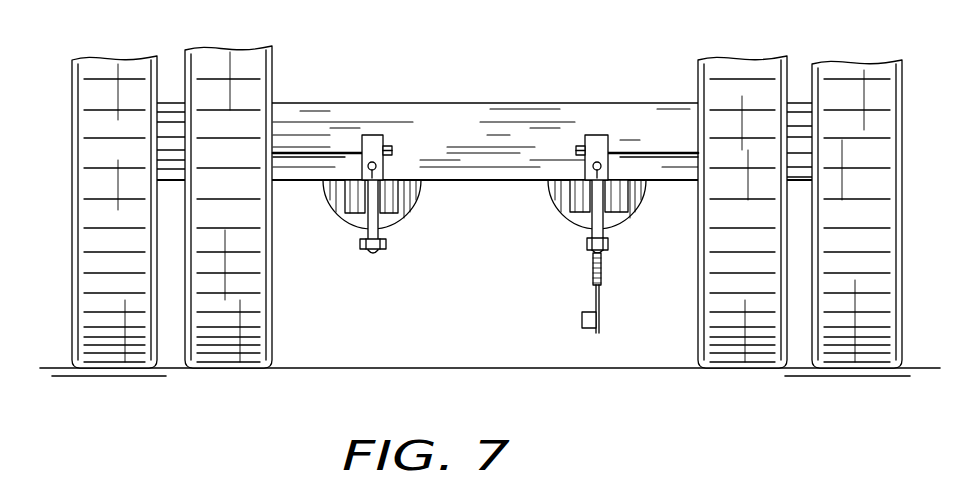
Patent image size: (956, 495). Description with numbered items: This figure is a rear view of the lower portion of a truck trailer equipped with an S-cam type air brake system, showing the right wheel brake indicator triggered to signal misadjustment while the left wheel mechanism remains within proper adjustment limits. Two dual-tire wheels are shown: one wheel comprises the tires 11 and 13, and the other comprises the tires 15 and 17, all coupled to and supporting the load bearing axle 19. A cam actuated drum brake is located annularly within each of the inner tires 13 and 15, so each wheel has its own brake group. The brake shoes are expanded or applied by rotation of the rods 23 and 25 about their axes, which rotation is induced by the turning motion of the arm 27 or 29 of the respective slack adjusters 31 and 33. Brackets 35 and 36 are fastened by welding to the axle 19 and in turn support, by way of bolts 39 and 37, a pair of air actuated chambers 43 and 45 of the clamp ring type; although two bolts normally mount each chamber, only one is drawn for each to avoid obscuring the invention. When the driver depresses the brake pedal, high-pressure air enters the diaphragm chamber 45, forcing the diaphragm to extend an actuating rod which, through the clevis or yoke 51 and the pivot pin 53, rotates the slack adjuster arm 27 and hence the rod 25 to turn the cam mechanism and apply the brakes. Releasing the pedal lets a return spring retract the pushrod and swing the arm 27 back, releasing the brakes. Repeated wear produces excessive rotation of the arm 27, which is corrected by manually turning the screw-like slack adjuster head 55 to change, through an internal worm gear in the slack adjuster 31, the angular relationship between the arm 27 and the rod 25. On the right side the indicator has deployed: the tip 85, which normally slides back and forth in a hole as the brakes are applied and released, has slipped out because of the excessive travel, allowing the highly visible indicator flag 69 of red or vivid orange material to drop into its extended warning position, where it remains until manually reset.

The tire 11 is at (115, 348).
The tire 13 is at (228, 353).
The tire 15 is at (738, 340).
The tire 17 is at (848, 340).
The load bearing axle 19 is at (465, 117).
The rod 23 is at (312, 148).
The rod 25 is at (633, 150).
The slack adjuster arm 27 is at (590, 234).
The slack adjuster arm 29 is at (365, 228).
The slack adjuster 31 is at (596, 135).
The slack adjuster 33 is at (372, 140).
The bracket 35 is at (392, 200).
The bracket 36 is at (588, 205).
The bolt 37 is at (560, 218).
The bolt 39 is at (395, 230).
The air actuated chamber 43 is at (348, 218).
The diaphragm chamber 45 is at (612, 228).
The clevis 51 is at (605, 250).
The pivot pin 53 is at (585, 245).
The slack adjuster head 55 is at (592, 166).
The indicator flag 69 is at (580, 320).
The tip 85 is at (600, 330).